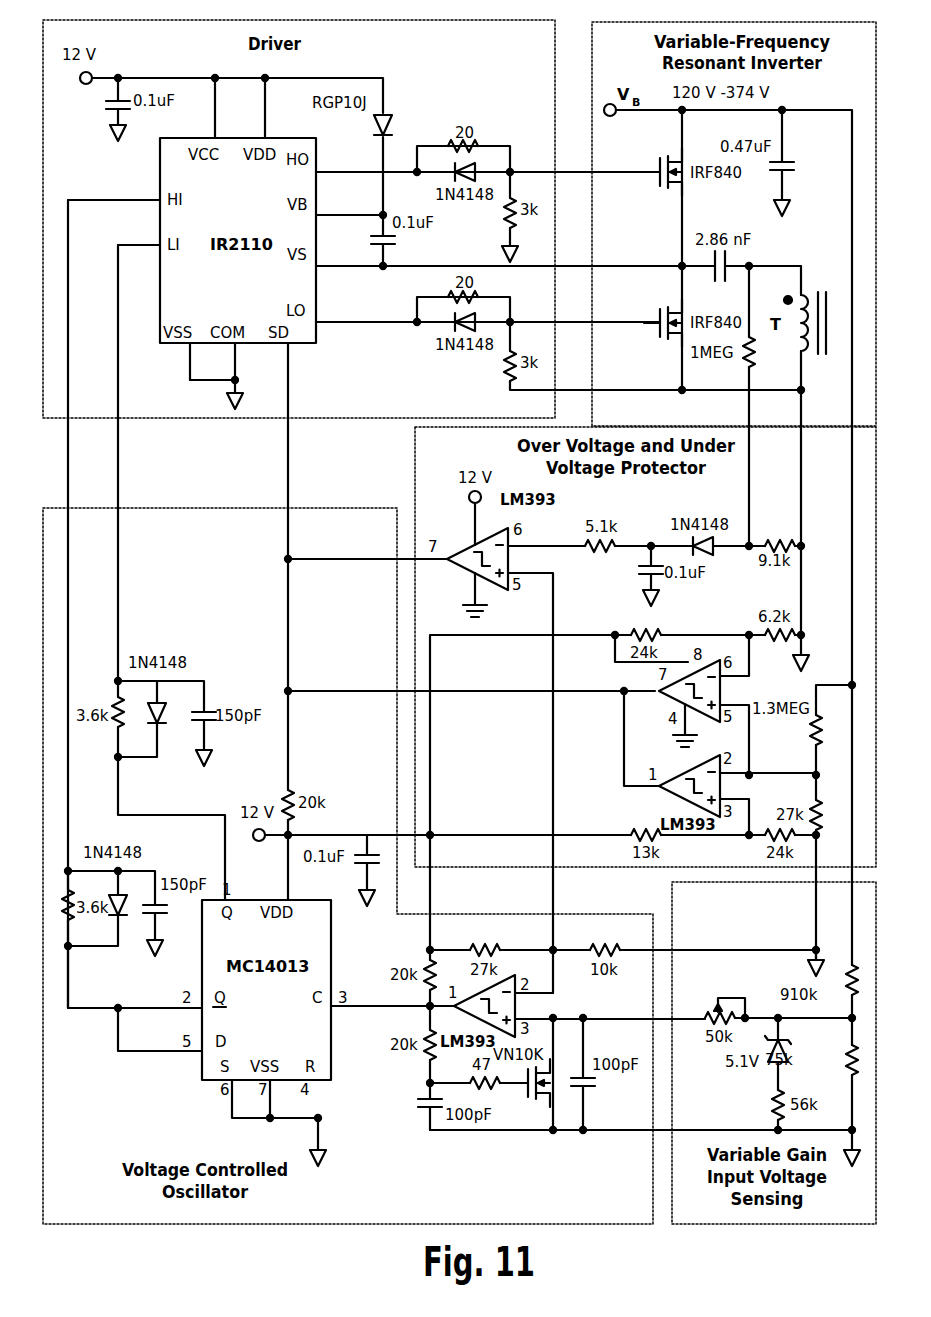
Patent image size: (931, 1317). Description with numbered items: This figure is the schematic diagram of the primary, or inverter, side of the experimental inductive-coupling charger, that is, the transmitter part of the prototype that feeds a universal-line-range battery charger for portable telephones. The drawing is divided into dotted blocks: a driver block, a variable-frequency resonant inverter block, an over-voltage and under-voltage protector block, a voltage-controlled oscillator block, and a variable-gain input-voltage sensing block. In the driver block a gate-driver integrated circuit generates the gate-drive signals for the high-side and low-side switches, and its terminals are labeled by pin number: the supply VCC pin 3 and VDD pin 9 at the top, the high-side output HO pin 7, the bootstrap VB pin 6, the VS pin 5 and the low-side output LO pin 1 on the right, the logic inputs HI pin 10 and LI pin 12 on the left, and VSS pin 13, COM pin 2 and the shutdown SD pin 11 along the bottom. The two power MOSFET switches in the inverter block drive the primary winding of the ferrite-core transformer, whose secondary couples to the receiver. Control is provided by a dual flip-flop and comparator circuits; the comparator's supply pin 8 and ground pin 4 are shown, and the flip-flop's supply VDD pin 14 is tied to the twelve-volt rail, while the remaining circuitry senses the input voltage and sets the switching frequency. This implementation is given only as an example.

The LO pin of IR2110 driver 1 is at (366, 312).
The COM pin of IR2110 driver 2 is at (231, 368).
The VCC pin of IR2110 driver 3 is at (205, 108).
The ground pin of LM393 comparator 4 is at (468, 589).
The VS pin of IR2110 driver 5 is at (349, 256).
The VB pin of IR2110 driver 6 is at (349, 205).
The HO pin of IR2110 driver 7 is at (366, 161).
The supply pin of LM393 comparator 8 is at (482, 524).
The VDD pin of IR2110 driver 9 is at (255, 108).
The HI pin of IR2110 driver 10 is at (114, 191).
The SD pin of IR2110 driver 11 is at (277, 451).
The LI pin of IR2110 driver 12 is at (139, 236).
The VSS pin of IR2110 driver 13 is at (179, 361).
The VDD pin of MC14013 flip-flop 14 is at (283, 867).